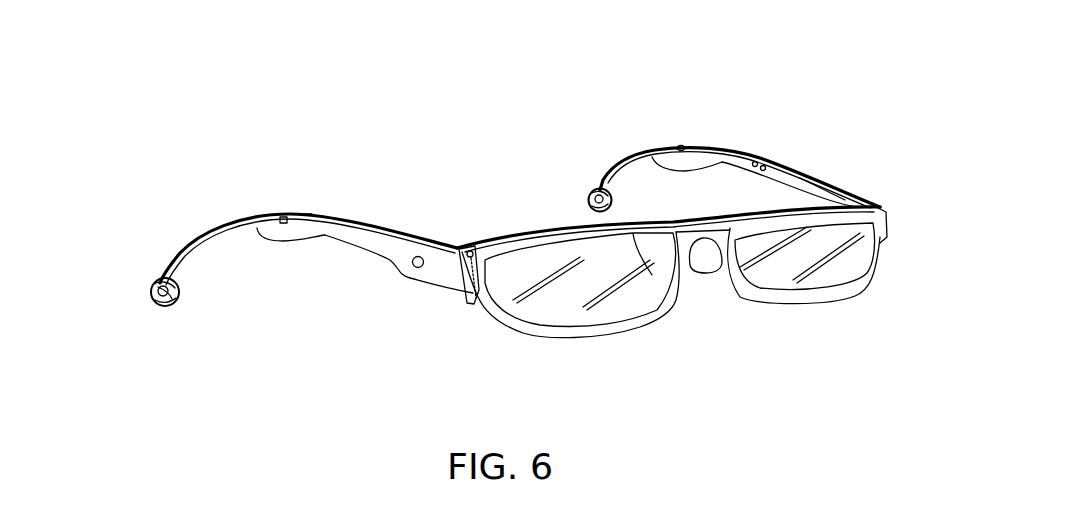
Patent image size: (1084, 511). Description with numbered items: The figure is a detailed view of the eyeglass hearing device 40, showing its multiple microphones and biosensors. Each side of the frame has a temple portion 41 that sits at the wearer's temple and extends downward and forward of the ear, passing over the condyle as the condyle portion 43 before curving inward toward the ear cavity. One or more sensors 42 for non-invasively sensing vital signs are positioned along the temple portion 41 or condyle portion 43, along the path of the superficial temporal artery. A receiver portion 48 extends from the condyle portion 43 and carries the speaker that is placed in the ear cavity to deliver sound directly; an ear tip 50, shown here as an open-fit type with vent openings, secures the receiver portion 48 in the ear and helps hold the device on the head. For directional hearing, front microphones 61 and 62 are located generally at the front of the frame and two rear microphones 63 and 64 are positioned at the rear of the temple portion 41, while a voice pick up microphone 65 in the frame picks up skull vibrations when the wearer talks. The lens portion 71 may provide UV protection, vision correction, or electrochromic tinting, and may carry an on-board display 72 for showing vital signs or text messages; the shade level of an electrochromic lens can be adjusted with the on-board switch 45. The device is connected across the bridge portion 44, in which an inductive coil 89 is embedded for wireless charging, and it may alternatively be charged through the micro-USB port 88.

The eyeglass hearing device 40 is at (549, 230).
The temple portion 41 is at (810, 174).
The sensors 42 is at (350, 216).
The condyle portion 43 is at (198, 229).
The bridge portion 44 is at (720, 272).
The on-board switch 45 is at (419, 268).
The receiver portion 48 is at (156, 268).
The ear tip 50 is at (176, 302).
The front microphone 61 is at (480, 303).
The front microphone 62 is at (887, 224).
The rear microphone 63 is at (284, 217).
The rear microphone 64 is at (680, 146).
The voice pick up microphone 65 is at (306, 212).
The lens portion 71 is at (572, 320).
The on-board display 72 is at (633, 237).
The micro-USB port 88 is at (847, 198).
The inductive coil 89 is at (700, 255).